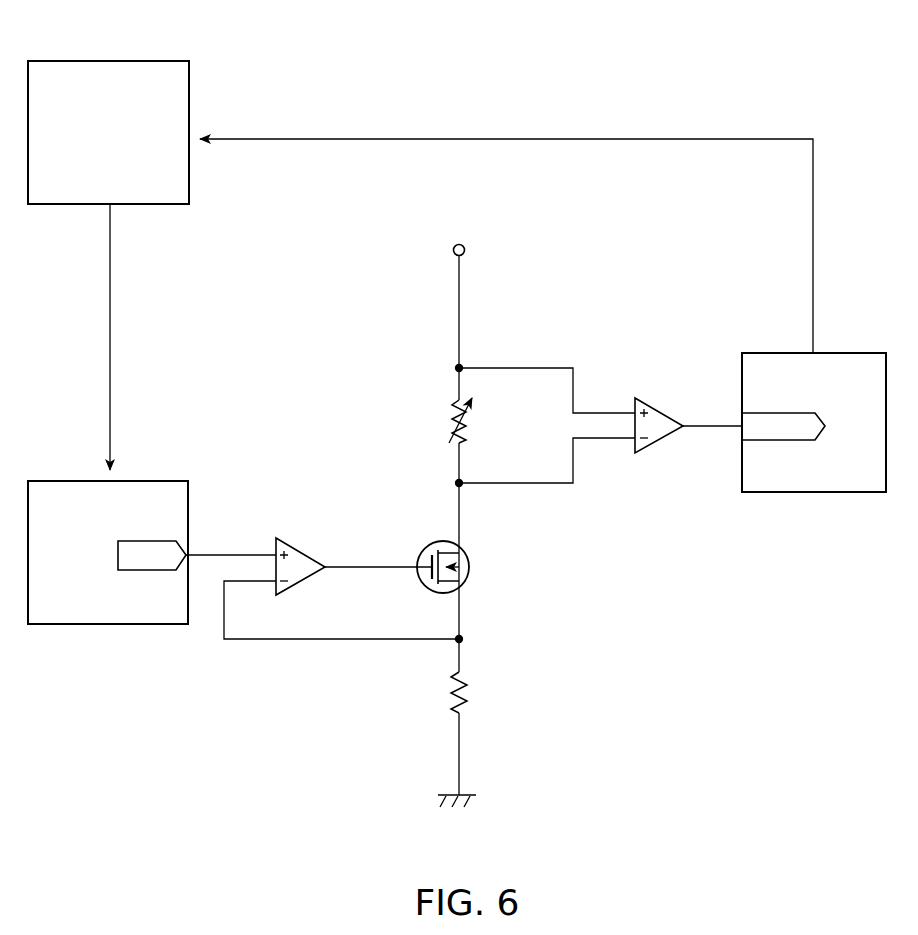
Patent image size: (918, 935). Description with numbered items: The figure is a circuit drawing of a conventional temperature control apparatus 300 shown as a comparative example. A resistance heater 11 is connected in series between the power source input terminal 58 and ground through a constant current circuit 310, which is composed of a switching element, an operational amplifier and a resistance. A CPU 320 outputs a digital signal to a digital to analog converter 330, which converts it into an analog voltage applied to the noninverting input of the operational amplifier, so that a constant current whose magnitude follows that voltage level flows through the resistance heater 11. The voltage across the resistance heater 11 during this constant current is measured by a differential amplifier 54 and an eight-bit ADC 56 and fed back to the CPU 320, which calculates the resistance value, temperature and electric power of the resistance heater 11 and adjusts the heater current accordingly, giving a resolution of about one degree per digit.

The CPU 320 is at (137, 61).
The digital to analog converter 330 is at (137, 481).
The temperature control apparatus 300 is at (712, 110).
The power source input terminal 58 is at (459, 244).
The resistance heater 11 is at (470, 420).
The differential amplifier 54 is at (645, 400).
The ADC 56 is at (813, 494).
The constant current circuit 310 is at (320, 662).